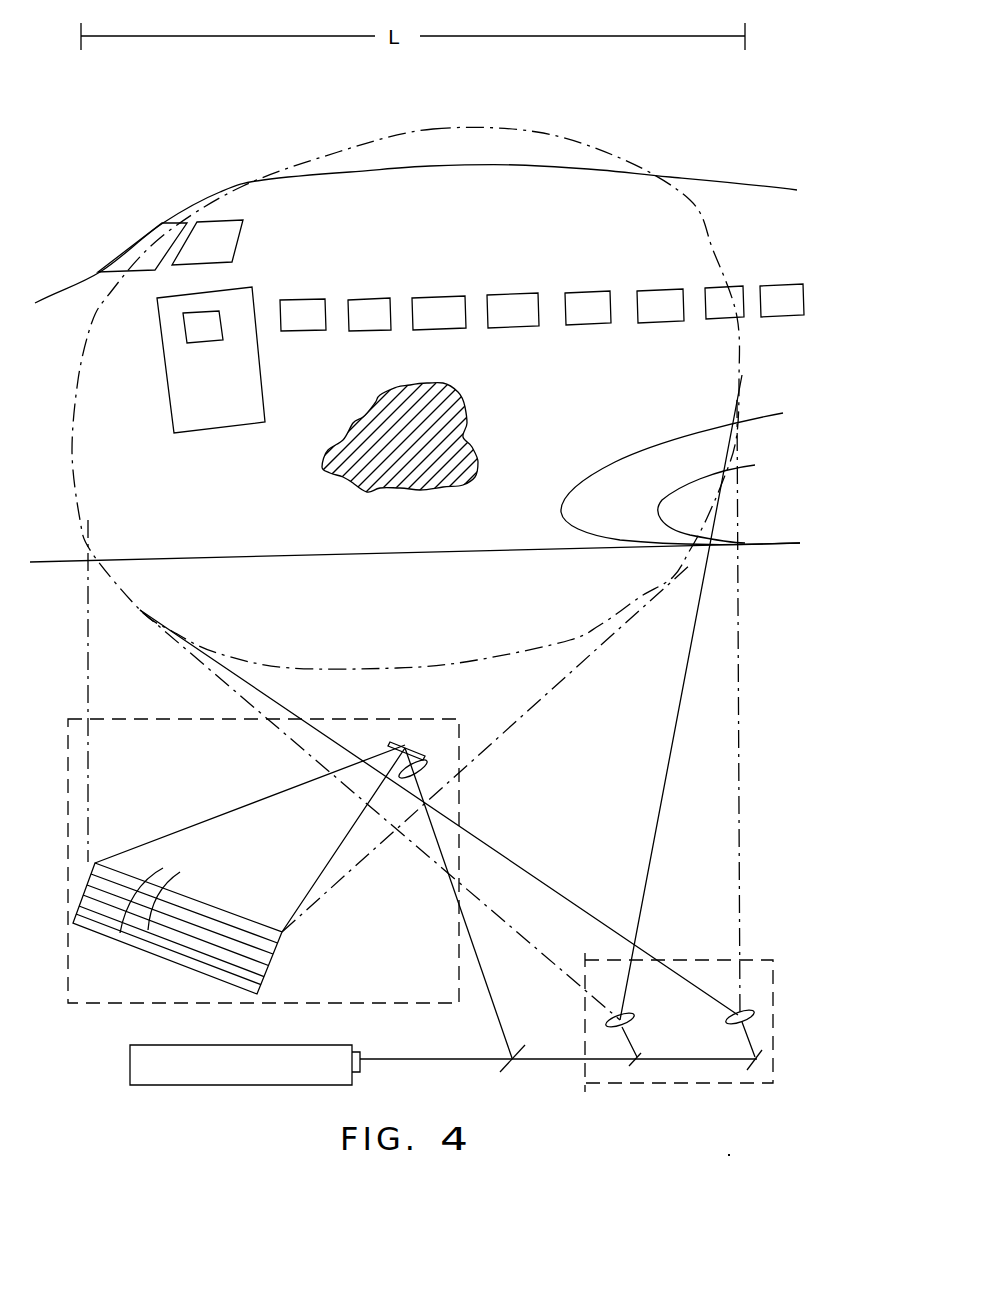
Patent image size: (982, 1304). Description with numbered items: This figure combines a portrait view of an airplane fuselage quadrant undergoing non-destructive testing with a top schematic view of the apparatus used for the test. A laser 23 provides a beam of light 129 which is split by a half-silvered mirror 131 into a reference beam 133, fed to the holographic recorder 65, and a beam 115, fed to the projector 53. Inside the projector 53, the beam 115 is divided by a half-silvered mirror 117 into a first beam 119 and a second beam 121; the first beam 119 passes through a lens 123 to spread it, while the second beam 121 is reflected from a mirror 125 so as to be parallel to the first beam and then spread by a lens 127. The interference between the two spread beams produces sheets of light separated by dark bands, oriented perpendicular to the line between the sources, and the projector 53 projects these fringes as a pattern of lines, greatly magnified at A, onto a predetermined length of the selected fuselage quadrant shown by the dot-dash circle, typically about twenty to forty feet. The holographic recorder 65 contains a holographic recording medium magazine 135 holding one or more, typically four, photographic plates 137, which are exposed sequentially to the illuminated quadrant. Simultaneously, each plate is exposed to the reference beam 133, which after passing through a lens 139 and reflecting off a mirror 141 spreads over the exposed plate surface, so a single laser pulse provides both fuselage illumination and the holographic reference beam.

The laser 23 is at (257, 1087).
The projector 53 is at (773, 962).
The holographic recorder 65 is at (459, 805).
The laser beam 115 is at (557, 1057).
The half-silvered mirror 117 is at (625, 1070).
The first beam 119 is at (630, 1043).
The second beam 121 is at (745, 1067).
The lens 123 is at (637, 1018).
The mirror 125 is at (758, 1057).
The lens 127 is at (755, 1010).
The beam of light 129 is at (420, 1060).
The half-silvered mirror 131 is at (510, 1067).
The reference beam 133 is at (493, 990).
The holographic recording medium magazine 135 is at (275, 962).
The photographic plates 137 is at (191, 910).
The lens 139 is at (428, 768).
The mirror 141 is at (408, 745).
The pattern of lines A is at (468, 413).